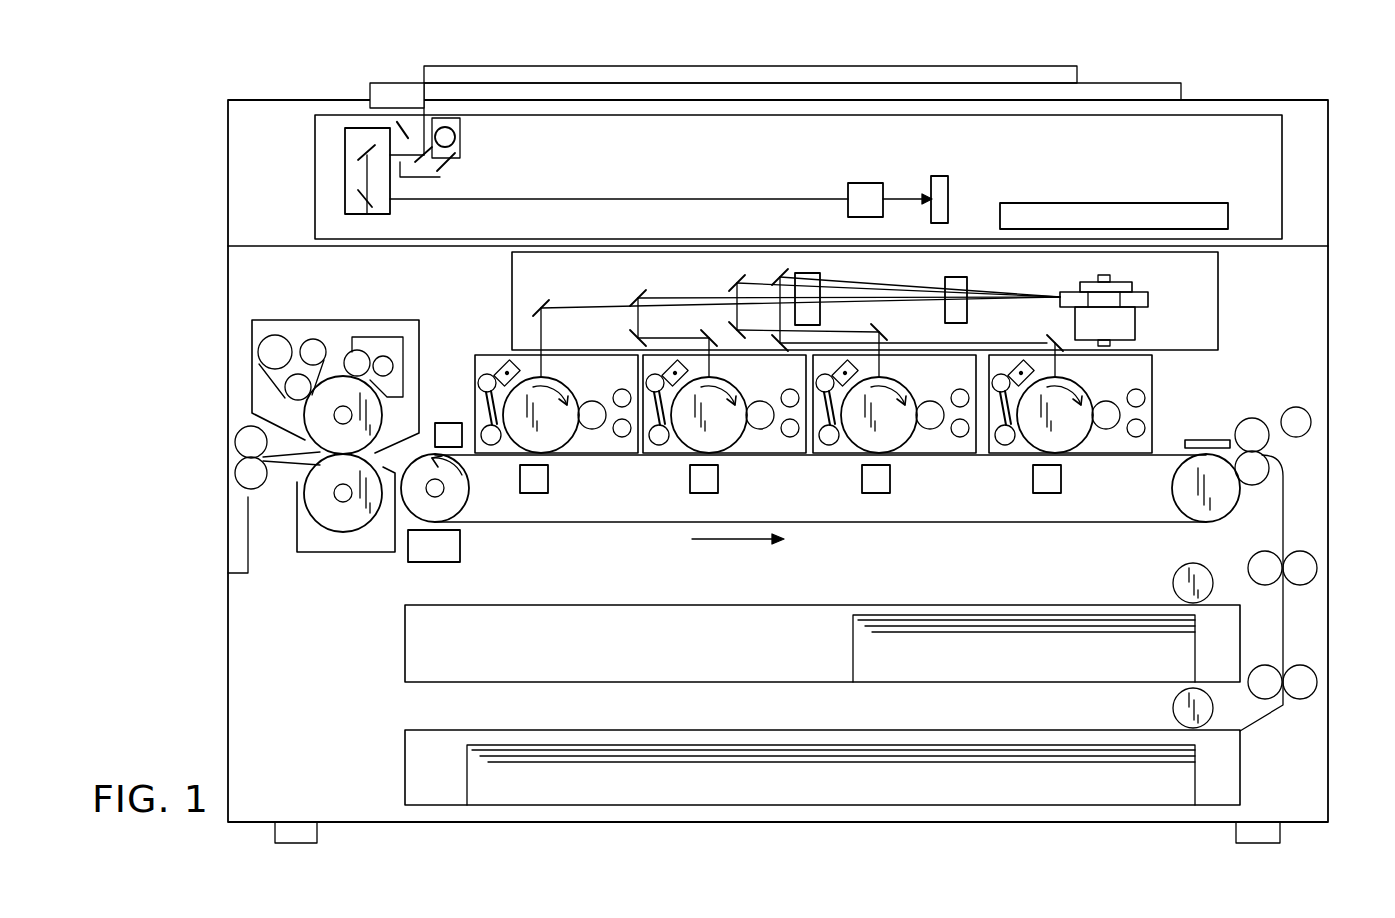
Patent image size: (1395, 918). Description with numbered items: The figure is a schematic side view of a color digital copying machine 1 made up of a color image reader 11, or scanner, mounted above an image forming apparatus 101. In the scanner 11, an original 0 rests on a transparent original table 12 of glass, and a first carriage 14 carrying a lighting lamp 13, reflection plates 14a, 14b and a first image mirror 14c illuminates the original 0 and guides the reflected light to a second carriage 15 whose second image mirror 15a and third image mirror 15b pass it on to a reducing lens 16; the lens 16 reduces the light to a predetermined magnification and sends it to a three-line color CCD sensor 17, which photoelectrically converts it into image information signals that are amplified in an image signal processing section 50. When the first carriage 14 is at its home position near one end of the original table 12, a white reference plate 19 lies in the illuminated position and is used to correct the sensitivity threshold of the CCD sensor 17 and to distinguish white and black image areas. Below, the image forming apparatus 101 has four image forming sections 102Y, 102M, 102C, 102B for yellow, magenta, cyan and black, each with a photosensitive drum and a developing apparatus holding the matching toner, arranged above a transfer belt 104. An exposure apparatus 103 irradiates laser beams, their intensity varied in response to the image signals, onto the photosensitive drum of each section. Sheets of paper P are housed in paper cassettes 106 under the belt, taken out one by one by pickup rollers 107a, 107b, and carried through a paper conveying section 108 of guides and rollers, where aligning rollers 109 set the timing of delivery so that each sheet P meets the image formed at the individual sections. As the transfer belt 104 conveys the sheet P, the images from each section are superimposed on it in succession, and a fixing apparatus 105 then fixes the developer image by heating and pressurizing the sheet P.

The original 0 is at (766, 66).
The color digital copying machine 1 is at (218, 321).
The color image reader 11 is at (1328, 172).
The original table 12 is at (720, 100).
The lighting lamp 13 is at (455, 137).
The first carriage 14 is at (436, 182).
The reflection plate 14a is at (437, 158).
The reflection plate 14b is at (397, 125).
The first image mirror 14c is at (442, 172).
The second carriage 15 is at (390, 208).
The second image mirror 15a is at (366, 150).
The third image mirror 15b is at (362, 196).
The reducing lens 16 is at (866, 183).
The 3-line color CCD sensor 17 is at (940, 176).
The white reference plate 19 is at (398, 105).
The image signal processing section 50 is at (1194, 203).
The image forming apparatus 101 is at (1328, 357).
The image forming section 102B is at (608, 453).
The image forming section 102C is at (780, 453).
The image forming section 102M is at (950, 453).
The image forming section 102Y is at (1122, 453).
The exposure apparatus 103 is at (1218, 300).
The transfer belt 104 is at (1000, 522).
The fixing apparatus 105 is at (290, 320).
The paper cassette 106 is at (405, 642).
The pickup roller 107a is at (1174, 580).
The pickup roller 107b is at (1174, 705).
The paper conveying section 108 is at (1283, 628).
The aligning rollers 109 is at (1256, 486).
The sheet of paper P is at (936, 615).